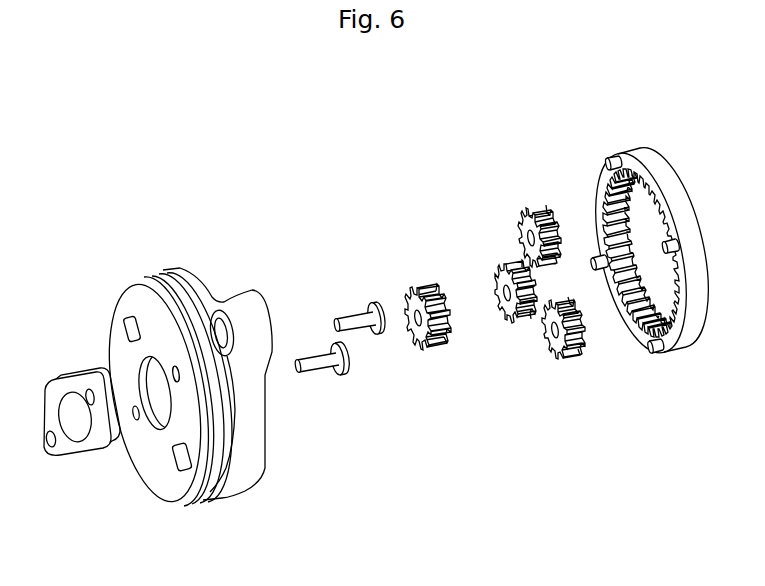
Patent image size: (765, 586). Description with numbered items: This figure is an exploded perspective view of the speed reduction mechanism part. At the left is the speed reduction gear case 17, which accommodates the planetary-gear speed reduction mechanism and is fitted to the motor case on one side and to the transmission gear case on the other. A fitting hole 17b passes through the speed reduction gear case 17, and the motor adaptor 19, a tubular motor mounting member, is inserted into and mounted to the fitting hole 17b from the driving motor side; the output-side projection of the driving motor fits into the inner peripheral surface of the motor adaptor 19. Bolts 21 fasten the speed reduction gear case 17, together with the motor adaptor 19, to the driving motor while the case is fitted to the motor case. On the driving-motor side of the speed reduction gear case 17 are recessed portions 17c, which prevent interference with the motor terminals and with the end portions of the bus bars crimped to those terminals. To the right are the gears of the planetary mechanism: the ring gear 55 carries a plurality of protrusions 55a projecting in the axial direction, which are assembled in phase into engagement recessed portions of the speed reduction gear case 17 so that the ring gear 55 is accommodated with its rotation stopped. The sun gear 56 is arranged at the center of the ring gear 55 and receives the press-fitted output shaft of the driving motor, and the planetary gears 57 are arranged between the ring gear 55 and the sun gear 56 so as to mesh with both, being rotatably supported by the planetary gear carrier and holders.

The speed reduction gear case 17 is at (171, 390).
The fitting hole 17b is at (143, 430).
The recessed portions 17c is at (128, 327).
The motor adaptor 19 is at (58, 380).
The bolts 21 is at (303, 363).
The ring gear 55 is at (643, 259).
The protrusions 55a is at (662, 356).
The sun gear 56 is at (424, 287).
The planetary gears 57 is at (570, 300).